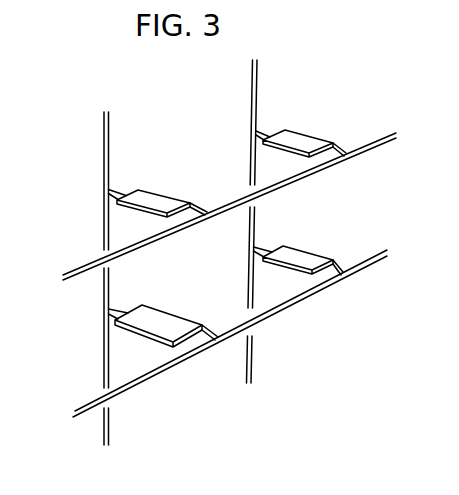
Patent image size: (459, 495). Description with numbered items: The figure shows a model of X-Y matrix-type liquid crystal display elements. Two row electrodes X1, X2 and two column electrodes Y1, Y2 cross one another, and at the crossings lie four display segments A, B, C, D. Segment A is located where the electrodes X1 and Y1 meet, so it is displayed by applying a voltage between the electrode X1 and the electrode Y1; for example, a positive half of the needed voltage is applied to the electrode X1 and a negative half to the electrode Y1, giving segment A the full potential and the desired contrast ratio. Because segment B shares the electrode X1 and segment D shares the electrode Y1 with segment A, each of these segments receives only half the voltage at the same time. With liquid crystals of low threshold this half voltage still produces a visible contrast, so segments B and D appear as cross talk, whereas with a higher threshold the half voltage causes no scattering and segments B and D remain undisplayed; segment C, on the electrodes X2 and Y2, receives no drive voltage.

The segment A is at (160, 203).
The segment B is at (309, 142).
The segment C is at (307, 259).
The segment D is at (171, 323).
The electrode X1 is at (211, 214).
The electrode X2 is at (213, 343).
The electrode Y1 is at (113, 297).
The electrode Y2 is at (251, 247).